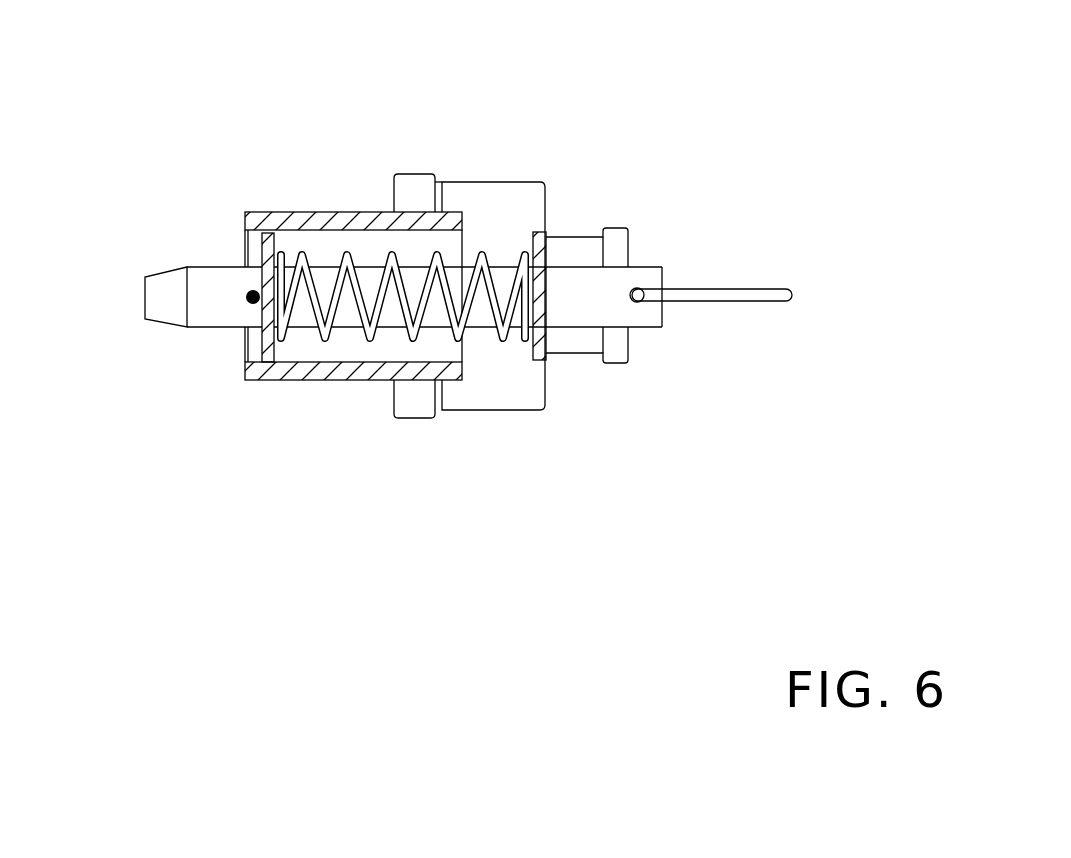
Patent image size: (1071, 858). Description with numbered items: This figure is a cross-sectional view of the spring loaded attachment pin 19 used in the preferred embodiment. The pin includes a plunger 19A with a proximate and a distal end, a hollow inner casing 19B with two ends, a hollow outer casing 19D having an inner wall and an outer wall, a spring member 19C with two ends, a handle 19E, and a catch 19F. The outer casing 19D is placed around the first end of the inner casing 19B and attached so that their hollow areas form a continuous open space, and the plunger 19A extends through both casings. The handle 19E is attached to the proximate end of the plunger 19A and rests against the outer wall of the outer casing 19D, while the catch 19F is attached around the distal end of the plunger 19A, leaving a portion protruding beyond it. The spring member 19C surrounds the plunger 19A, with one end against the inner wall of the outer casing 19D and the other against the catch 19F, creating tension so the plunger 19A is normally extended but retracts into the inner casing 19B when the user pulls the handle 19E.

The spring loaded attachment pin 19 is at (483, 178).
The plunger 19A is at (205, 288).
The hollow inner casing 19B is at (325, 212).
The spring member 19C is at (503, 330).
The hollow outer casing 19D is at (547, 390).
The handle 19E is at (628, 228).
The catch 19F is at (260, 347).